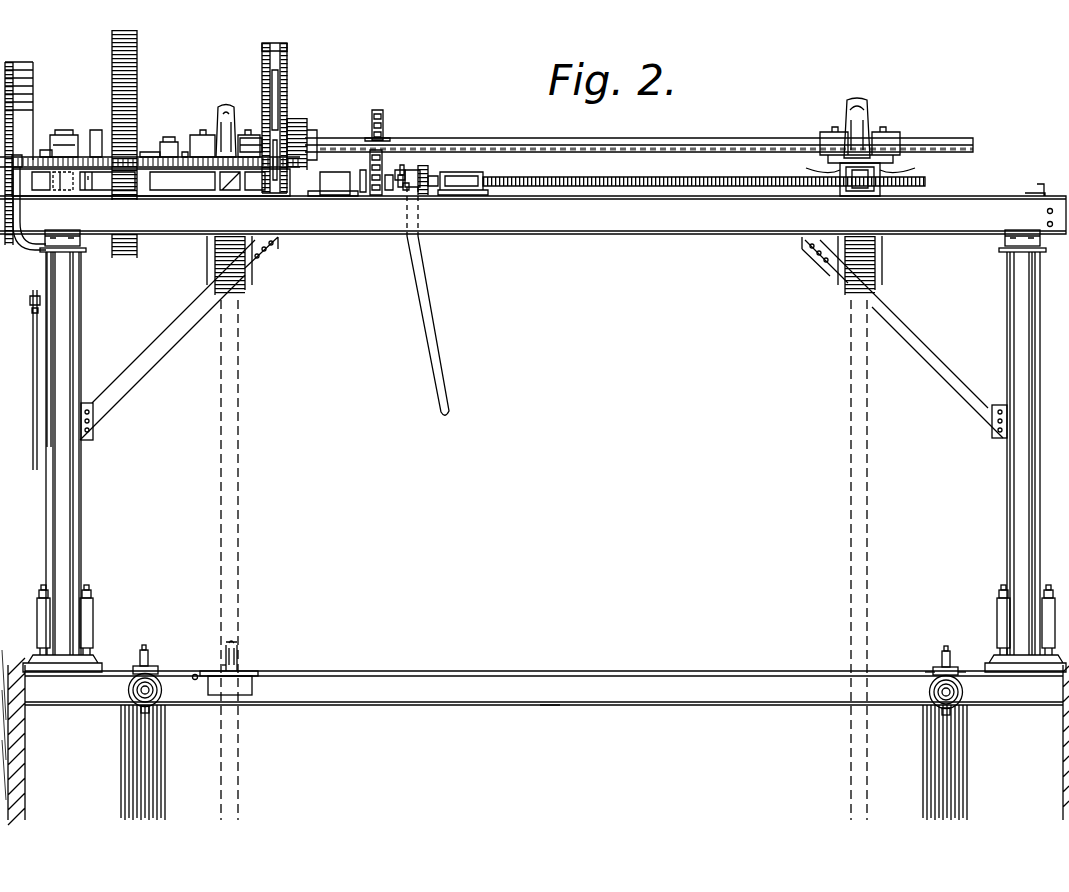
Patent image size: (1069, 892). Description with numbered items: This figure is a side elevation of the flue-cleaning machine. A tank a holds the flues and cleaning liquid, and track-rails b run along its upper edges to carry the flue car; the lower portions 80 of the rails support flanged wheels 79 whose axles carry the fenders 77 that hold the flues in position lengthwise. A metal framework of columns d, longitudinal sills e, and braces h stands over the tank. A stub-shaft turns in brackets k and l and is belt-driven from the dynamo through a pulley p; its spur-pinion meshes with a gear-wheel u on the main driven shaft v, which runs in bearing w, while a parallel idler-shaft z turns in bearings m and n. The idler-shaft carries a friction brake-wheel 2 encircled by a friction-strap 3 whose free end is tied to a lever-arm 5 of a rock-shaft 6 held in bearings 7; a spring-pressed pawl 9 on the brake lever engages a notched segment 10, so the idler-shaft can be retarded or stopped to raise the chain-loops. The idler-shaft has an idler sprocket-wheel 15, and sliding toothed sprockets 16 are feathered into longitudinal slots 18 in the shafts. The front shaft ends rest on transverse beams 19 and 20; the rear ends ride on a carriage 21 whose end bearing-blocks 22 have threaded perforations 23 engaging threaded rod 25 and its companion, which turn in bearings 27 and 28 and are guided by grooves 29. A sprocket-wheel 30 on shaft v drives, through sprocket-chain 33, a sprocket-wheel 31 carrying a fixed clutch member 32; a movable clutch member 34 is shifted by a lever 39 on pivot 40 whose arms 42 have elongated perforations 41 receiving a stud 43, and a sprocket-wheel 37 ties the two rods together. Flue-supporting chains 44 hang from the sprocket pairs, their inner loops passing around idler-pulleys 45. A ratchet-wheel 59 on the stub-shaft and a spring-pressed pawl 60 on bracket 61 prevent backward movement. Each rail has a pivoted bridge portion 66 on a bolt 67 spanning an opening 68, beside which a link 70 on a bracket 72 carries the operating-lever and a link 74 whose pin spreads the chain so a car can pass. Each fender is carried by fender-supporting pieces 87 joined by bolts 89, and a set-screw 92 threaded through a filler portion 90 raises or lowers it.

The friction brake-wheel 2 is at (262, 65).
The friction-strap 3 is at (285, 56).
The lever-arm 5 is at (280, 145).
The rock-shaft 6 is at (143, 152).
The metallic bearings or brackets 7 is at (135, 152).
The spring-pressed pawl 9 is at (30, 304).
The notched segment 10 is at (22, 258).
The idler sprocket-wheel 15 is at (222, 112).
The toothed sprockets 16 is at (857, 108).
The longitudinal slots 18 is at (580, 138).
The transverse beam 19 is at (248, 196).
The transverse beam 20 is at (222, 196).
The carriage or movable transverse beam 21 is at (856, 162).
The end bearing-blocks 22 is at (848, 196).
The threaded perforations 23 is at (862, 196).
The threaded rod 25 is at (550, 186).
The bearing 27 is at (325, 191).
The bearing 28 is at (460, 186).
The grooves 29 is at (292, 125).
The sprocket-wheel 30 is at (375, 110).
The sprocket-wheel 31 is at (366, 185).
The clutch member 32 is at (390, 165).
The sprocket-chain 33 is at (370, 168).
The movable clutch member 34 is at (388, 190).
The sprocket-wheel 37 is at (425, 165).
The lever 39 is at (430, 300).
The pivot 40 is at (418, 216).
The elongated perforation 41 is at (400, 185).
The arms 42 is at (406, 190).
The pin or stud 43 is at (404, 165).
The flue-supporting chains 44 is at (238, 446).
The idler-pulleys 45 is at (215, 272).
The ratchet-wheel 59 is at (97, 128).
The spring-pressed pawl 60 is at (80, 192).
The bracket 61 is at (96, 192).
The pivoted bridge portion 66 is at (245, 671).
The bolt or pivot 67 is at (194, 680).
The opening 68 is at (245, 690).
The link 70 is at (238, 660).
The supporting bracket or stud 72 is at (224, 665).
The link or lever 74 is at (228, 655).
The fenders 77 is at (155, 760).
The flanged wheels 79 is at (128, 692).
The lower portions 80 is at (572, 705).
The fender-supporting pieces 87 is at (932, 670).
The bolts 89 is at (958, 670).
The filler portion 90 is at (152, 666).
The set-screw 92 is at (140, 652).
The tank a is at (457, 775).
The track-rails b is at (430, 671).
The columns d is at (72, 505).
The longitudinal sills e is at (533, 209).
The braces h is at (168, 338).
The bearing or bracket k is at (46, 148).
The bearing or bracket l is at (170, 140).
The bearing m is at (200, 134).
The bearing n is at (832, 128).
The pulley p is at (19, 153).
The gear-wheel u is at (137, 75).
The main driven shaft v is at (183, 150).
The bearing w is at (66, 132).
The idler-shaft z is at (340, 140).